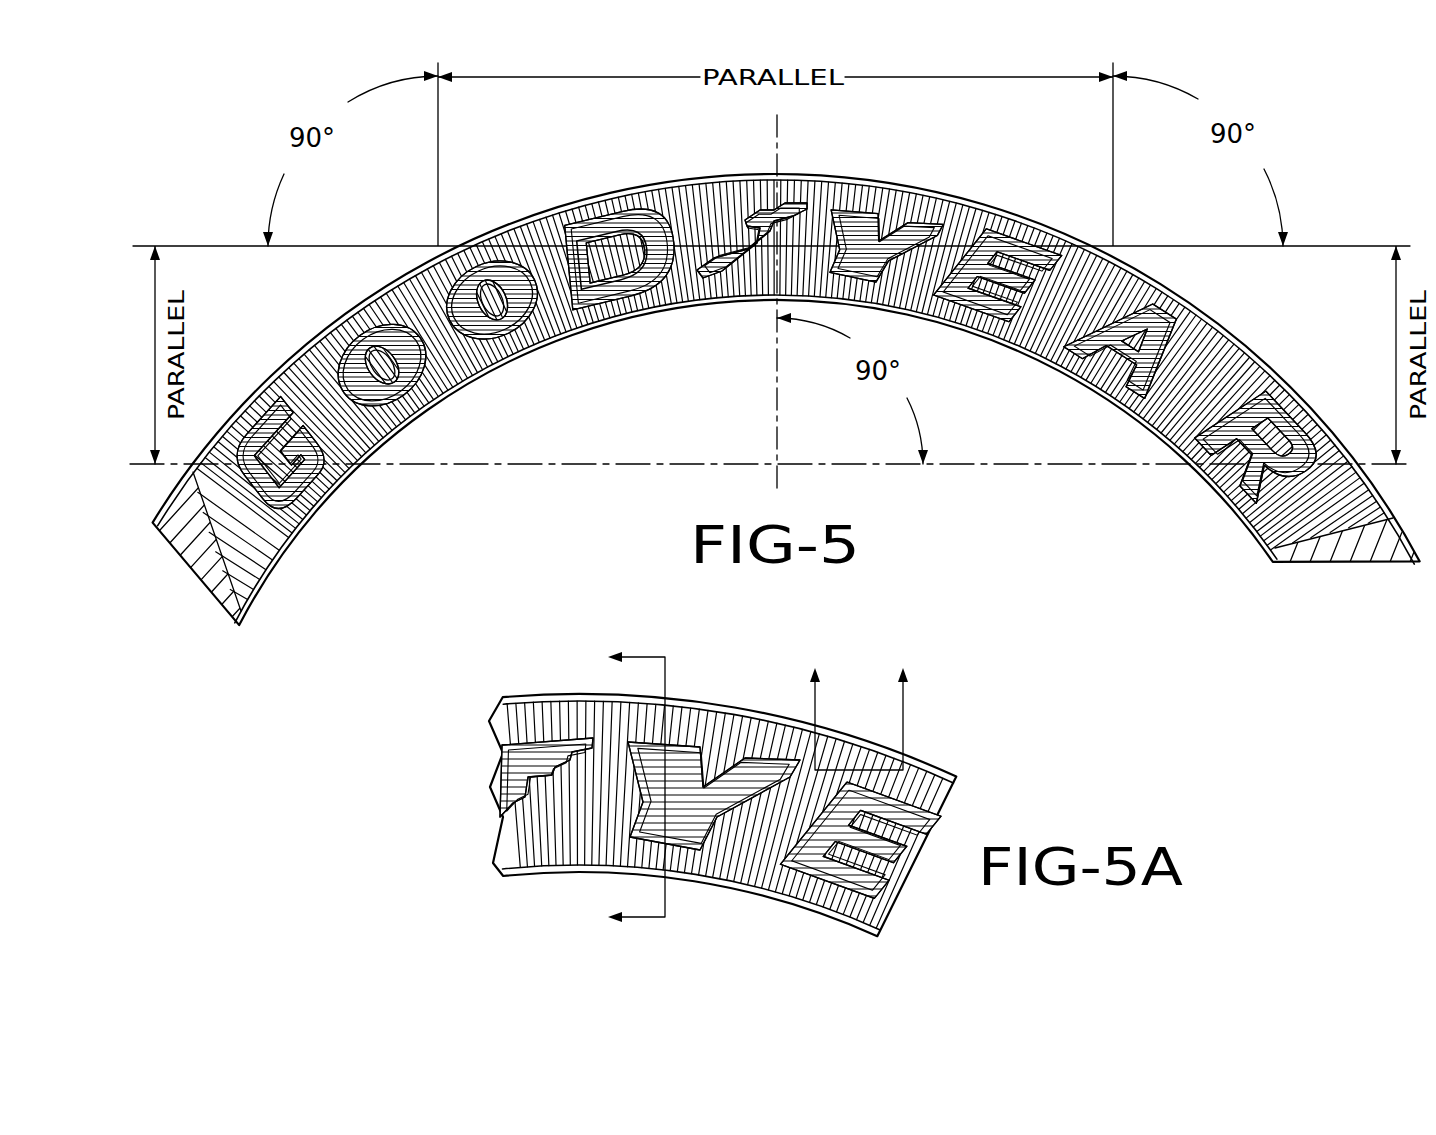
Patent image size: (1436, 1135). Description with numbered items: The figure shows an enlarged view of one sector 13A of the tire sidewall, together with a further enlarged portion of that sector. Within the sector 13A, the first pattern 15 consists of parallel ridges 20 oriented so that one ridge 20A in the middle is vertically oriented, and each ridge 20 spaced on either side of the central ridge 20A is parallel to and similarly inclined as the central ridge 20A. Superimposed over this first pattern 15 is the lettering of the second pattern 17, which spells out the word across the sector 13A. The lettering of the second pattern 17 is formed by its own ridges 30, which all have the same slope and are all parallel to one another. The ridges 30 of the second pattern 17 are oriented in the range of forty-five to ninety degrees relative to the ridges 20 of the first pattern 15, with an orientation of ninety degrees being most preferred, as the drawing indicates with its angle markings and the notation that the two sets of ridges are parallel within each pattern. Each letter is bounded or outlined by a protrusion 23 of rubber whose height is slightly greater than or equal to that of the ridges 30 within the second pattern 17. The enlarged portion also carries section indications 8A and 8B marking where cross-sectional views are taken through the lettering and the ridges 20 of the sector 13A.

In FIG. 5, the sector 13A is at (550, 232).
In FIG. 5A, the sector 13A is at (512, 845).
In FIG. 5, the first pattern 15 is at (1213, 350).
In FIG. 5A, the first pattern 15 is at (550, 722).
In FIG. 5, the second pattern 17 is at (910, 227).
In FIG. 5A, the second pattern 17 is at (710, 742).
In FIG. 5, the ridges 20 is at (706, 197).
In FIG. 5, the central ridge 20A is at (777, 190).
In FIG. 5A, the protrusion 23 is at (915, 802).
In FIG. 5, the ridges 30 is at (1285, 480).
In FIG. 5A, the ridges 30 is at (755, 775).
In FIG. 5A, the section line 8A- 8A is at (859, 707).
In FIG. 5A, the section line 8B- 8B is at (618, 791).